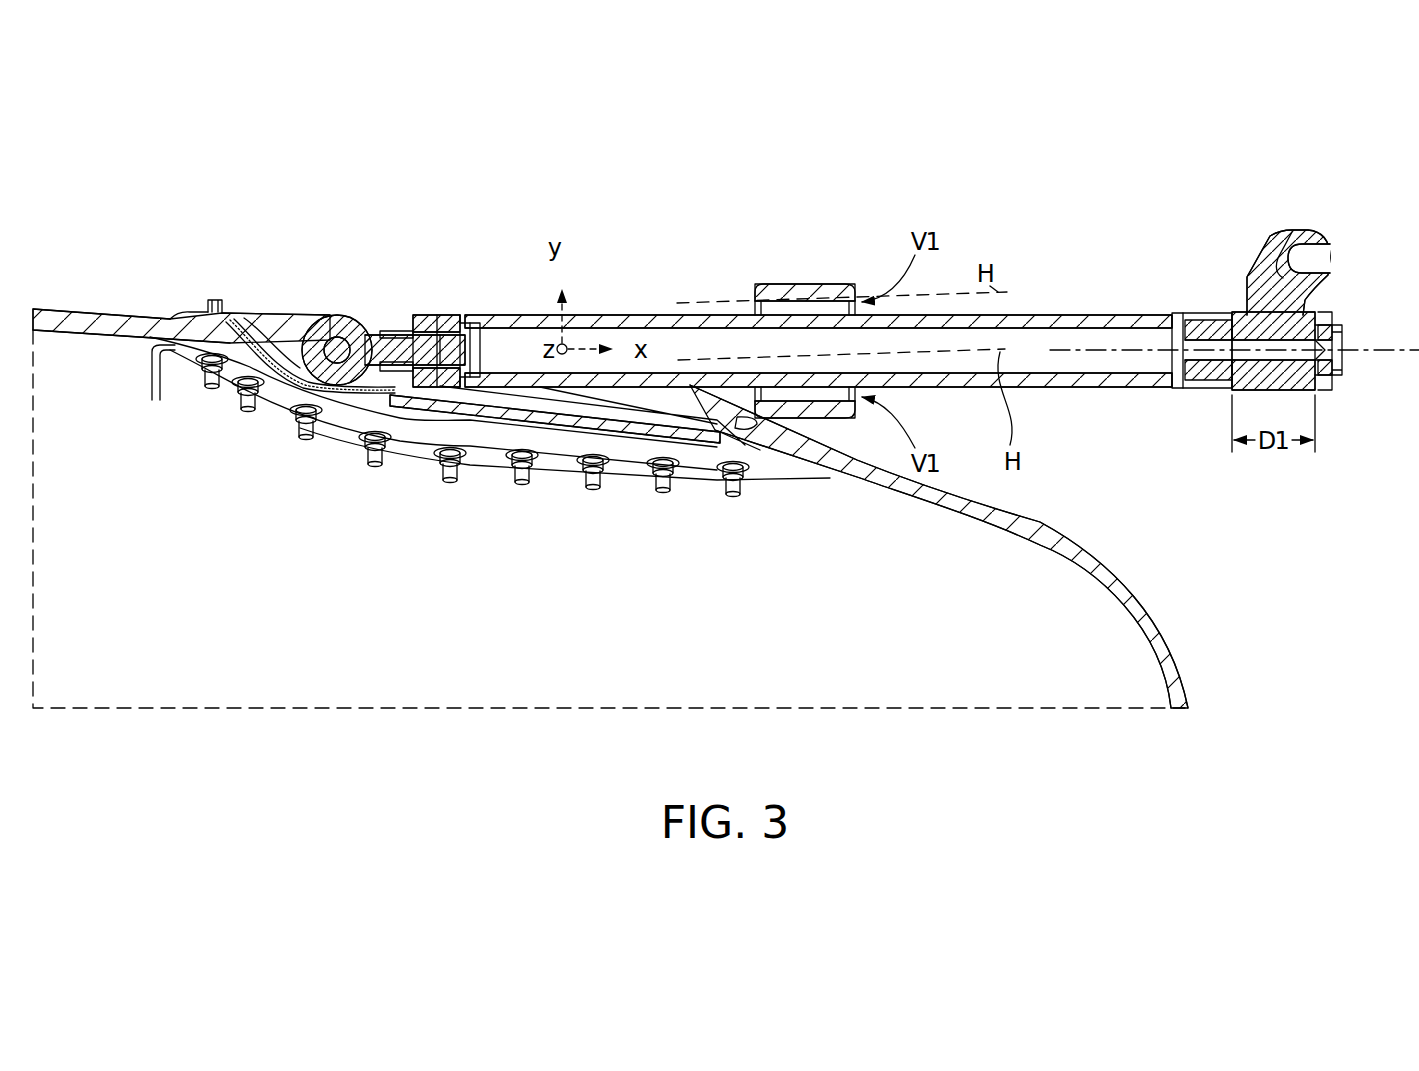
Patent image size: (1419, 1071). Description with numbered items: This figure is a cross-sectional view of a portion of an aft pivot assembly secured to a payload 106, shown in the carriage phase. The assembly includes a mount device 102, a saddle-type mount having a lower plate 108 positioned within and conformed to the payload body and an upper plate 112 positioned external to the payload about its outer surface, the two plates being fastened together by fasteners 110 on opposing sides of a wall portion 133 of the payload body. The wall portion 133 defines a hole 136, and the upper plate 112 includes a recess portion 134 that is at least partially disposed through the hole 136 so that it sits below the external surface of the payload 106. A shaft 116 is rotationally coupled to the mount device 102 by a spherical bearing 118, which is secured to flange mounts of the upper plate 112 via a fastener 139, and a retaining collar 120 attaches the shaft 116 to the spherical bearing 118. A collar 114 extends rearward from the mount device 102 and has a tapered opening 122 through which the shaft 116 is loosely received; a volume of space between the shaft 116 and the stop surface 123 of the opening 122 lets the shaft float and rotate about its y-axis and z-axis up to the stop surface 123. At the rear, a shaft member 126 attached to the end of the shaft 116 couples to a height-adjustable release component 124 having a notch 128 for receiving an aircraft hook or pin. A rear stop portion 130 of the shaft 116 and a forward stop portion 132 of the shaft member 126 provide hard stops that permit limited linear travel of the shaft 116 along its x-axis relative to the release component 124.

The mount device 102 is at (466, 200).
The payload 106 is at (1168, 650).
The lower plate 108 is at (420, 447).
The fasteners 110 is at (660, 494).
The upper plate 112 is at (483, 405).
The collar 114 is at (805, 285).
The shaft 116 is at (1095, 318).
The spherical bearing 118 is at (333, 314).
The retaining collar 120 is at (420, 316).
The opening 122 is at (748, 299).
The stop surface 123 is at (803, 392).
The release component 124 is at (1283, 238).
The shaft member 126 is at (1348, 343).
The notch 128 is at (1320, 262).
The rear stop portion 130 is at (1320, 393).
The forward stop portion 132 is at (1215, 394).
The wall portion 133 is at (165, 400).
The recess portion 134 is at (272, 332).
The hole 136 is at (566, 432).
The fastener 139 is at (305, 438).